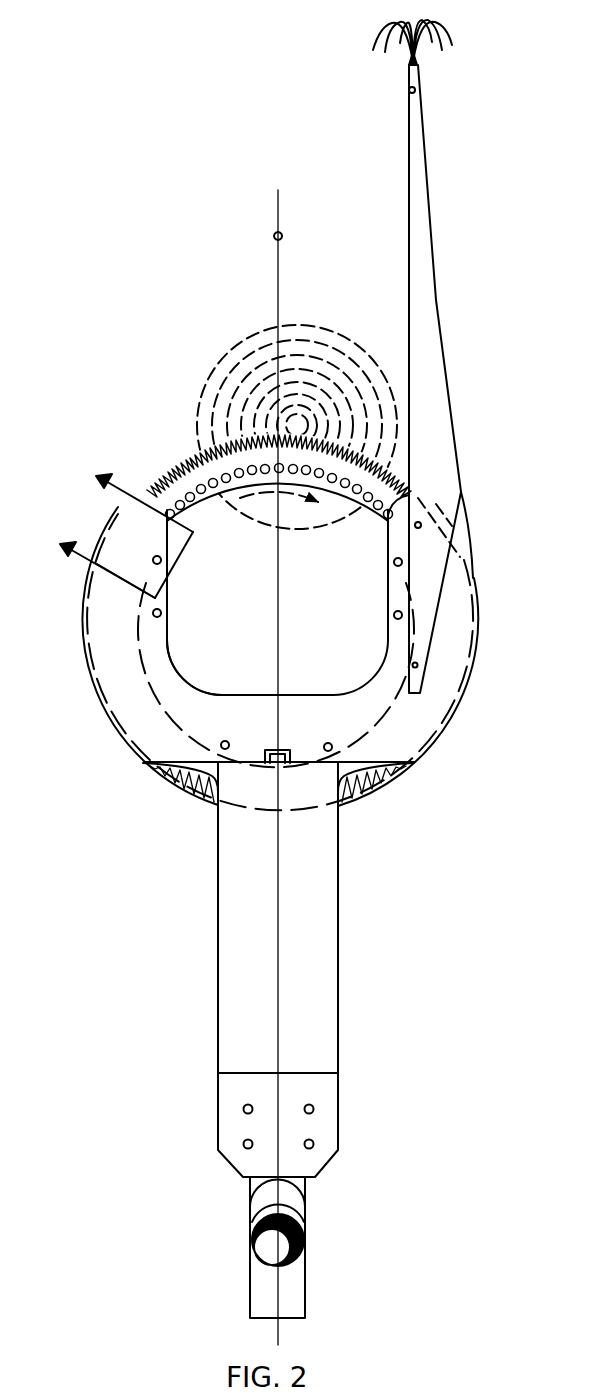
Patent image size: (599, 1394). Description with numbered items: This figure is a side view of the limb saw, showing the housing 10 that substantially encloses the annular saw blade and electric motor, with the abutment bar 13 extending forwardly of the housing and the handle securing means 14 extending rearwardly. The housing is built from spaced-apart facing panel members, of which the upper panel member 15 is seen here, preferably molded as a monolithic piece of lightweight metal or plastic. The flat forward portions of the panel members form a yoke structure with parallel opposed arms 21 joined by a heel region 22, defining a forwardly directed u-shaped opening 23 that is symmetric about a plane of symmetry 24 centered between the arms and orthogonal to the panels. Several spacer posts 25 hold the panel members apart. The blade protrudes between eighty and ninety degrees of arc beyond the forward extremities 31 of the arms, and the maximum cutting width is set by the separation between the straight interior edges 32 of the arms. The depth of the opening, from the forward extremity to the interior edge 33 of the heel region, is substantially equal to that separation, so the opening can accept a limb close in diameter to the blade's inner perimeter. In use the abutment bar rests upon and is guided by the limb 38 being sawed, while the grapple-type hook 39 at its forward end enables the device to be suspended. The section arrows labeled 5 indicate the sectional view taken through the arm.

The section line 5- 5 is at (114, 526).
The housing 10 is at (216, 934).
The abutment bar 13 is at (432, 197).
The handle securing means 14 is at (307, 1266).
The upper panel member 15 is at (316, 939).
The arms 21 is at (82, 642).
The heel region 22 is at (313, 738).
The u-shaped opening 23 is at (263, 622).
The plane of symmetry 24 is at (278, 238).
The spacer posts 25 is at (164, 614).
The forward extremities 31 is at (140, 493).
The straight interior edges 32 is at (170, 596).
The interior edge 33 is at (222, 692).
The limb 38 is at (334, 371).
The grapple-type hook 39 is at (437, 23).